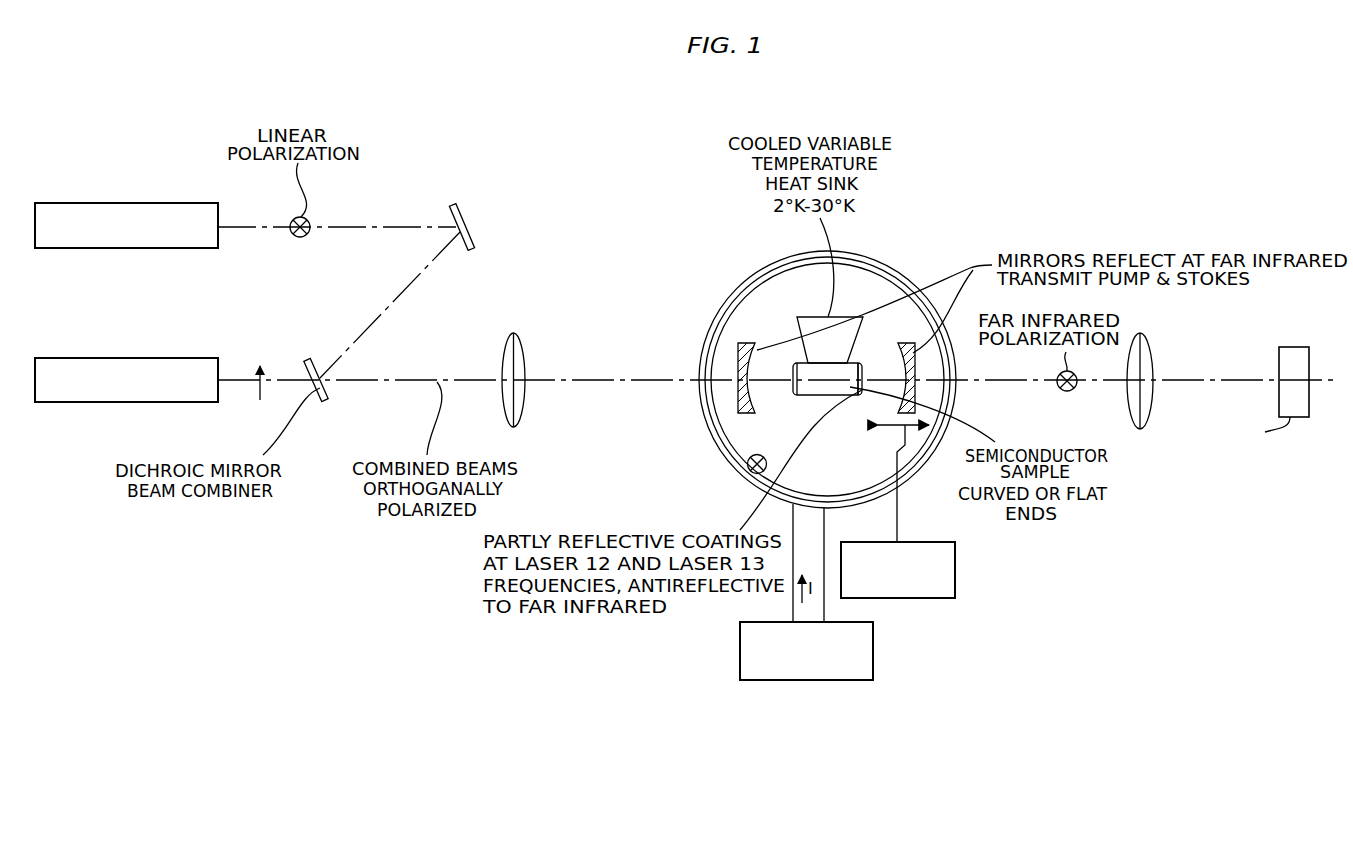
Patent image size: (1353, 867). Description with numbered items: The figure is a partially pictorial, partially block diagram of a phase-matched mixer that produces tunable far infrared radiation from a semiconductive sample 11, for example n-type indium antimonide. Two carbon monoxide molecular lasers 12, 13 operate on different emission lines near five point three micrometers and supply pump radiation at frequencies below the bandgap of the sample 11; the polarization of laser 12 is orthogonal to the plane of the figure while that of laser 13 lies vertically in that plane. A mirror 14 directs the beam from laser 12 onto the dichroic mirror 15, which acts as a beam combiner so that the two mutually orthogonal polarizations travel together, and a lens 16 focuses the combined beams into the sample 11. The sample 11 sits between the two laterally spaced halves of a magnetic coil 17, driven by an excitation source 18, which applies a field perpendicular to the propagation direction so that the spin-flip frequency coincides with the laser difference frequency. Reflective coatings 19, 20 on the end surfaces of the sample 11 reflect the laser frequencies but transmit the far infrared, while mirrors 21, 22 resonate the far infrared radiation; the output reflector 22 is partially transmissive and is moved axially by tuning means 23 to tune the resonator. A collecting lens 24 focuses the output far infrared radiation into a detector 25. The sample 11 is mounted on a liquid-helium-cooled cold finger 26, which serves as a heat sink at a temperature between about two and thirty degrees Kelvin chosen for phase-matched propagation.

The semiconductive sample 11 is at (808, 388).
The laser 12 is at (115, 203).
The laser 13 is at (115, 358).
The mirror 14 is at (465, 212).
The dichroic mirror 15 is at (325, 398).
The lens 16 is at (520, 338).
The magnetic coil 17 is at (737, 295).
The excitation source 18 is at (873, 657).
The reflective coating 19 is at (793, 372).
The reflective coating 20 is at (862, 373).
The mirror 21 is at (756, 407).
The output reflector 22 is at (900, 350).
The tuning means 23 is at (955, 572).
The collecting lens 24 is at (1147, 338).
The detector 25 is at (1290, 347).
The cold finger 26 is at (840, 322).